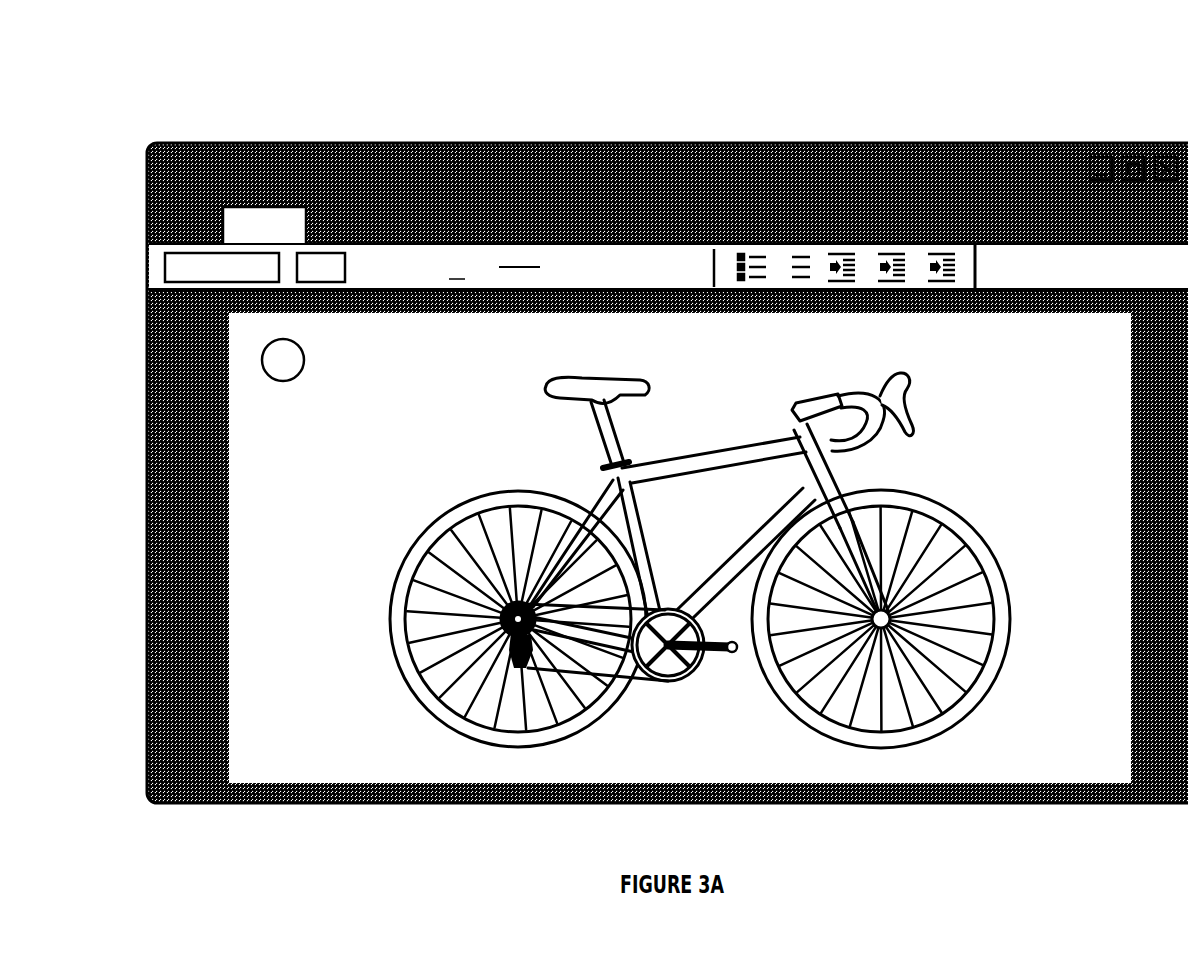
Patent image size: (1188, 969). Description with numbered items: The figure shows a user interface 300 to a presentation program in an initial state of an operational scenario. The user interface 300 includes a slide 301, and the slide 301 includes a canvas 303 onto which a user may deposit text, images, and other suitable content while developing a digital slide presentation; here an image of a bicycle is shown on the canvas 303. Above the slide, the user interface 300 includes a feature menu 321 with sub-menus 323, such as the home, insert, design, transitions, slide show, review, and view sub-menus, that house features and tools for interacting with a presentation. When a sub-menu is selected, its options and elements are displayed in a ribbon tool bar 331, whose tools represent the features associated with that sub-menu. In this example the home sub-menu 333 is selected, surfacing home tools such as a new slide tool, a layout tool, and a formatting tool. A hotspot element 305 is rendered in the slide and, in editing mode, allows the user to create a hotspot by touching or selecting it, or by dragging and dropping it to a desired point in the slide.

The user interface 300 is at (140, 66).
The slide 301 is at (201, 551).
The canvas 303 is at (285, 601).
The hotspot element 305 is at (298, 370).
The feature menu 321 is at (995, 179).
The sub-menus 323 is at (343, 203).
The ribbon tool bar 331 is at (1103, 275).
The home sub-menu 333 is at (682, 277).